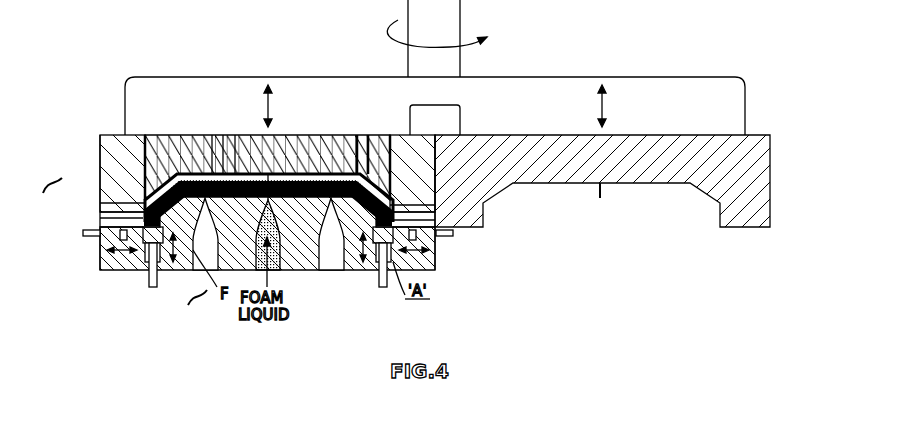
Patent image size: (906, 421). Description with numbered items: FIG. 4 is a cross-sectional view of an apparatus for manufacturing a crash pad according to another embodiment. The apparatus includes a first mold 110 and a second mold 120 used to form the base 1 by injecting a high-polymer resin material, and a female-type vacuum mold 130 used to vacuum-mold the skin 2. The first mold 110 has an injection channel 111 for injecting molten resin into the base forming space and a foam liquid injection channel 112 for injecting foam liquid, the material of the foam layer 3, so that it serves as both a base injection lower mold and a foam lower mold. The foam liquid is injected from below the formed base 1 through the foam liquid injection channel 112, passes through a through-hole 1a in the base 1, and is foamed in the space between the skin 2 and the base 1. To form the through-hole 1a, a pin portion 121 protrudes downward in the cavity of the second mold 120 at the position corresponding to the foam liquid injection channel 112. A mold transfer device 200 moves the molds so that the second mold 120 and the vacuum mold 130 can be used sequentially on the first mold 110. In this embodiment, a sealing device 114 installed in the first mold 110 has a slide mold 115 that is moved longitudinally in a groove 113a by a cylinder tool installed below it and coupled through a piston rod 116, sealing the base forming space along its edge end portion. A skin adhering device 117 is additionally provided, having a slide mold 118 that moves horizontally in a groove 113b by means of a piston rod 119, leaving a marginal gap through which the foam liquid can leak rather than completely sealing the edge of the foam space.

The base 1 is at (343, 153).
The through-hole 1a is at (295, 133).
The skin 2 is at (147, 190).
The foam layer 3 is at (224, 168).
The first mold 110 is at (98, 272).
The injection channel 111 is at (338, 257).
The foam liquid injection channel 112 is at (277, 270).
The groove 113a is at (143, 270).
The groove 113b is at (100, 243).
The sealing device 114 is at (207, 315).
The slide mold 115 is at (173, 264).
The piston rod 116 is at (157, 285).
The skin adhering device 117 is at (42, 178).
The slide mold 118 is at (130, 225).
The piston rod 119 is at (113, 218).
The second mold 120 is at (766, 132).
The pin portion 121 is at (600, 200).
The vacuum mold 130 is at (103, 133).
The mold transfer device 200 is at (450, 18).